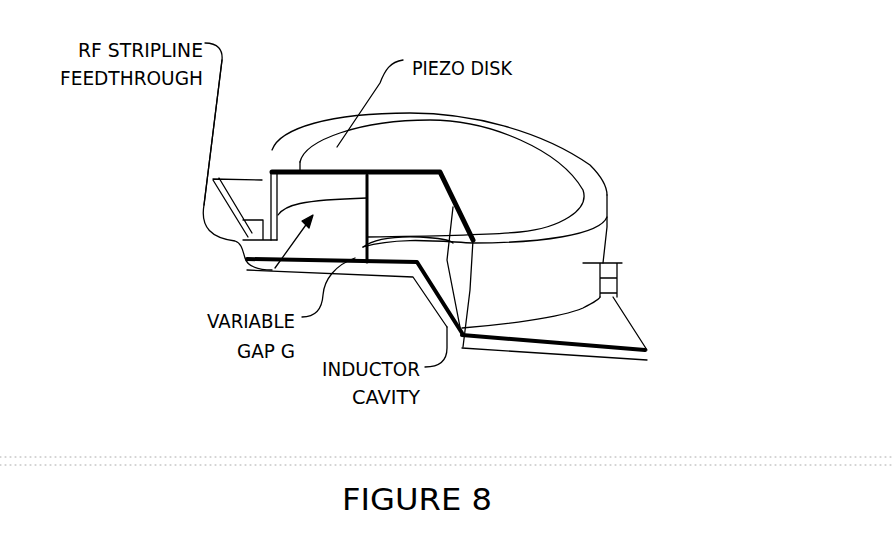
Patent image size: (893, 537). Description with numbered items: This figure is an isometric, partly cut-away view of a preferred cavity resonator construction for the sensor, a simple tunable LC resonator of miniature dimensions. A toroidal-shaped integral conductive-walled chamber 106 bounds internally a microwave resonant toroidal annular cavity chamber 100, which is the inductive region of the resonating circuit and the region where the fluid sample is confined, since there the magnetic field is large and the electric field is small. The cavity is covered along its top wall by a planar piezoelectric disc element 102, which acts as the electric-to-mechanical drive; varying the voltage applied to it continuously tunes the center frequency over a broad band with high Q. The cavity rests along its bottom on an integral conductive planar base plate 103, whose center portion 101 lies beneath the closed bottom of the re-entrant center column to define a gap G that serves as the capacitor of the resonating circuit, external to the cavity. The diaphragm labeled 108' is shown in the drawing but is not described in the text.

The toroidal annular cavity chamber 100 is at (355, 262).
The center portion of the base 101 is at (413, 270).
The piezoelectric disc element 102 is at (440, 140).
The conductive planar base plate 103 is at (647, 357).
The conductive-walled chamber 106 is at (620, 263).
The diaphragm 108' is at (484, 167).